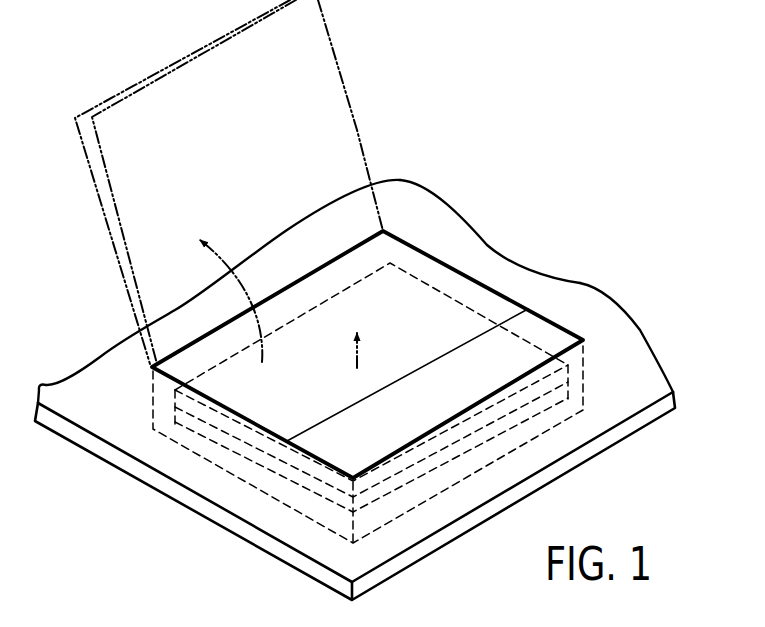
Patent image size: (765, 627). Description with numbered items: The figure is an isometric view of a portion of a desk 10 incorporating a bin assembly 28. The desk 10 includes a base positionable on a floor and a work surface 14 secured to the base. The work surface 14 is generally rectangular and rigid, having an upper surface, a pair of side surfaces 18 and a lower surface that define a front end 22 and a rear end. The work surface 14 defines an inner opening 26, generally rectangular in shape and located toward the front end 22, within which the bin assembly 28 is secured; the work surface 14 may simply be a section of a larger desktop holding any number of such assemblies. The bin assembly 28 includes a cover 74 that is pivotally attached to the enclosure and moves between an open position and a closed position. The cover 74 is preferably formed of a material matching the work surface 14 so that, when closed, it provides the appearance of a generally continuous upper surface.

The desk 10 is at (636, 247).
The work surface 14 is at (378, 272).
The side surfaces 18 is at (373, 496).
The front end 22 is at (633, 427).
The inner opening 26 is at (528, 308).
The bin assembly 28 is at (489, 241).
The cover 74 is at (365, 134).